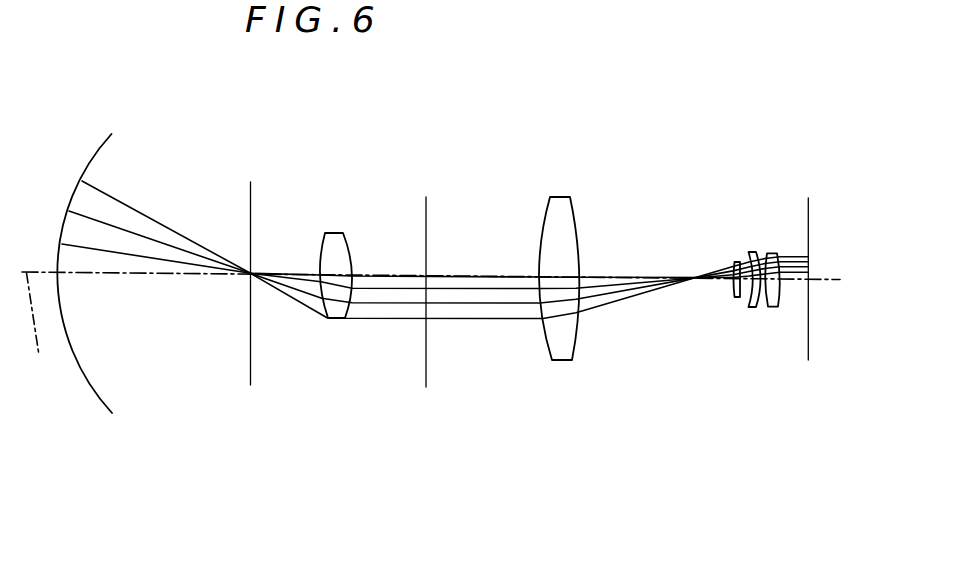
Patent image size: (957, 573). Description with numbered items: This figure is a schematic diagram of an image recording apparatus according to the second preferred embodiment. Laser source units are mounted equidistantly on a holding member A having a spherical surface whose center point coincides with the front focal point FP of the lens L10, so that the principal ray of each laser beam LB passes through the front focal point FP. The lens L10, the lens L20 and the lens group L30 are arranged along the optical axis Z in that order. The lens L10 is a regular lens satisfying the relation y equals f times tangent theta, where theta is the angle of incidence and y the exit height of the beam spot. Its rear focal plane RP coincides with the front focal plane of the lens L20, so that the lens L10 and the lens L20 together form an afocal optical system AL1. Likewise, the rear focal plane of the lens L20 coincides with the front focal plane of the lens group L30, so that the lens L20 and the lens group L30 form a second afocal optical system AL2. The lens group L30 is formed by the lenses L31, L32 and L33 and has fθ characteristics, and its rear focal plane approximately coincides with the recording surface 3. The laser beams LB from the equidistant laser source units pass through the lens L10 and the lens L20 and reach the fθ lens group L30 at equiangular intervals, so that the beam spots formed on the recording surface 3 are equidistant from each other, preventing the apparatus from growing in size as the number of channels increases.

The laser beam LB is at (140, 210).
The front focal point FP is at (254, 267).
The rear focal plane RP is at (428, 210).
The recording surface 3 is at (807, 210).
The optical axis Z is at (37, 332).
The holding member A is at (104, 403).
The lens L10 is at (343, 313).
The lens L20 is at (569, 317).
The fθ lens group L30 is at (720, 345).
The lens L31 is at (735, 291).
The lens L32 is at (755, 304).
The lens L33 is at (786, 322).
The afocal optical system AL1 is at (451, 350).
The afocal optical system AL2 is at (705, 335).